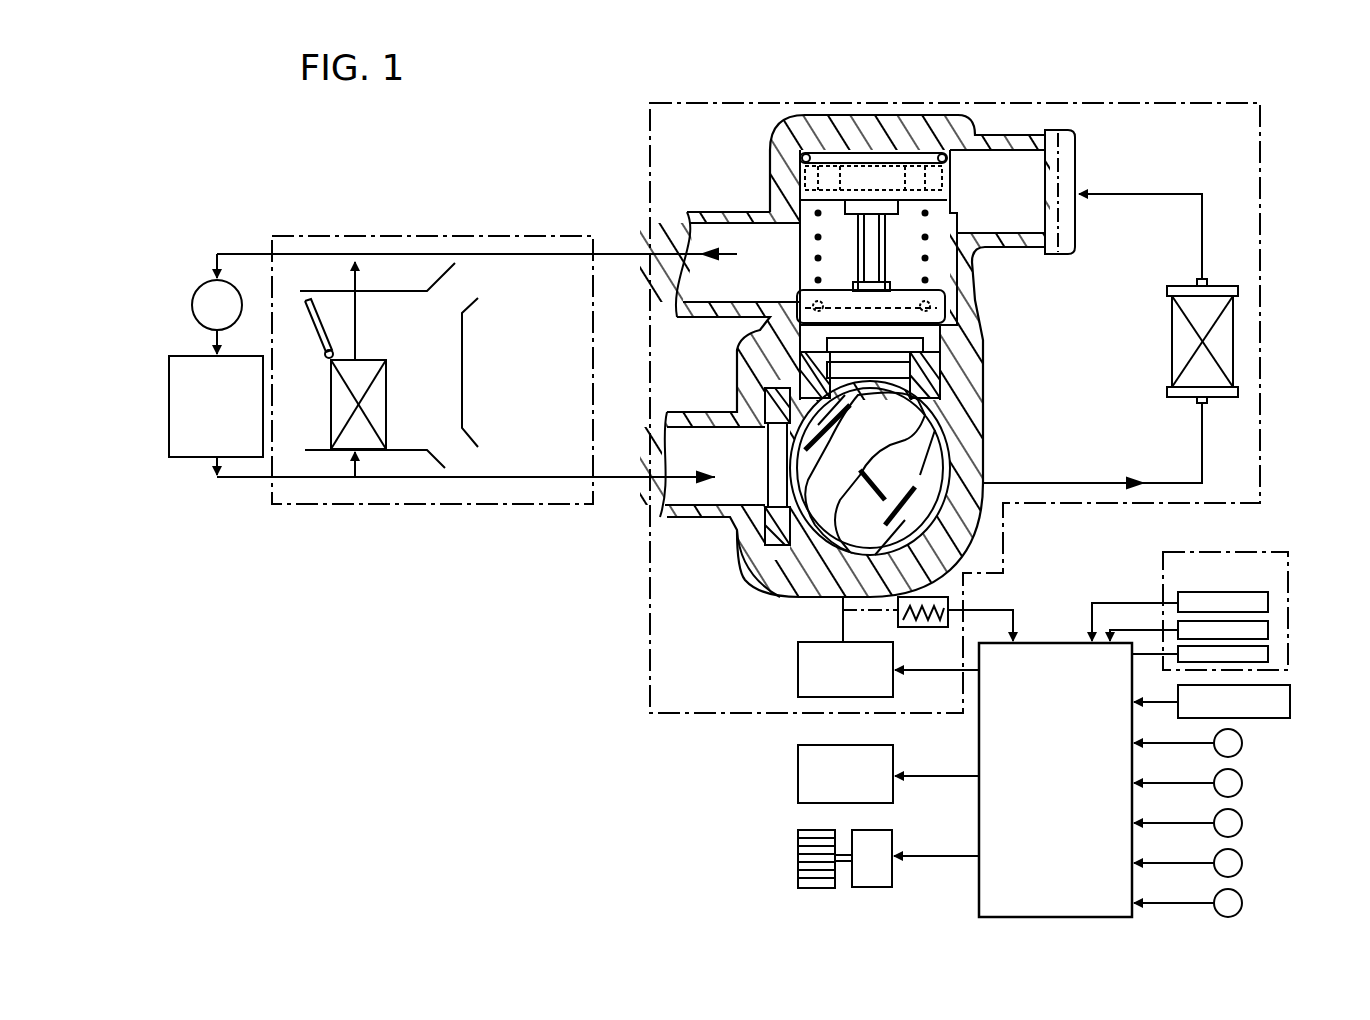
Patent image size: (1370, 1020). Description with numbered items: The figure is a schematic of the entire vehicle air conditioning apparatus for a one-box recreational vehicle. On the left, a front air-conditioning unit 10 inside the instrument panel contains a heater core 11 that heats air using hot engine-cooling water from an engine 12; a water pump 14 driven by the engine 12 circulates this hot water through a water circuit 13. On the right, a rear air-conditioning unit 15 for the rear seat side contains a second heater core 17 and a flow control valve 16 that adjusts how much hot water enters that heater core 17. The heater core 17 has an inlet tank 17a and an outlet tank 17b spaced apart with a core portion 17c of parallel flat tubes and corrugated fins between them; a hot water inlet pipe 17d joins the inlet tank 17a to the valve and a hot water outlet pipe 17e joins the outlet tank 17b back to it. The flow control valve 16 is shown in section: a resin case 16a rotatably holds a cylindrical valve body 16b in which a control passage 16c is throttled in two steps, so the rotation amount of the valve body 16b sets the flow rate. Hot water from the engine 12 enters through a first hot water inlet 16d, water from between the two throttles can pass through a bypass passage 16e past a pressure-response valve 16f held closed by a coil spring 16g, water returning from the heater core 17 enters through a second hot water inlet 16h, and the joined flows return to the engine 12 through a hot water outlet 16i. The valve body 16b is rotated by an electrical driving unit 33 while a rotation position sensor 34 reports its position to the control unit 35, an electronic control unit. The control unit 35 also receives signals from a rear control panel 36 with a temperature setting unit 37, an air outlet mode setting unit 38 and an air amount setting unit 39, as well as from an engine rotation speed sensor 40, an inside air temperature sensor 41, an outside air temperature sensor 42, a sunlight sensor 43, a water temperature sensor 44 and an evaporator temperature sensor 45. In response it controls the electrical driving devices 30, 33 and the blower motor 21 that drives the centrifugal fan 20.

The front air-conditioning unit 10 is at (478, 228).
The heater core 11 is at (353, 433).
The engine 12 is at (169, 383).
The water circuit 13 is at (253, 492).
The water pump 14 is at (195, 302).
The rear air-conditioning unit 15 is at (640, 125).
The flow control valve 16 is at (822, 368).
The case 16a is at (765, 595).
The valve body 16b is at (915, 510).
The control passage 16c is at (945, 545).
The first hot water inlet 16d is at (700, 517).
The bypass passage 16e is at (905, 347).
The pressure-response valve 16f is at (935, 312).
The coil spring 16g is at (818, 237).
The second hot water inlet 16h is at (1005, 185).
The hot water outlet 16i is at (700, 235).
The heater core 17 is at (1151, 340).
The inlet tank 17a is at (1228, 397).
The outlet tank 17b is at (1233, 286).
The core portion 17c is at (1222, 362).
The hot water inlet pipe 17d is at (1205, 470).
The hot water outlet pipe 17e is at (1202, 218).
The centrifugal fan 20 is at (798, 840).
The blower motor 21 is at (855, 887).
The electrical driving device 30 is at (798, 790).
The electrical driving unit 33 is at (798, 693).
The rotation position sensor 34 is at (935, 595).
The control unit 35 is at (979, 900).
The rear control panel 36 is at (1220, 608).
The rear temperature setting unit 37 is at (1268, 603).
The rear air outlet mode setting unit 38 is at (1268, 630).
The rear air amount setting unit 39 is at (1268, 654).
The engine speed sensor 40 is at (1290, 705).
The inside air temperature sensor 41 is at (1236, 732).
The outside air temperature sensor 42 is at (1236, 772).
The sunlight sensor 43 is at (1236, 812).
The water temperature sensor 44 is at (1236, 852).
The evaporator temperature sensor 45 is at (1236, 892).